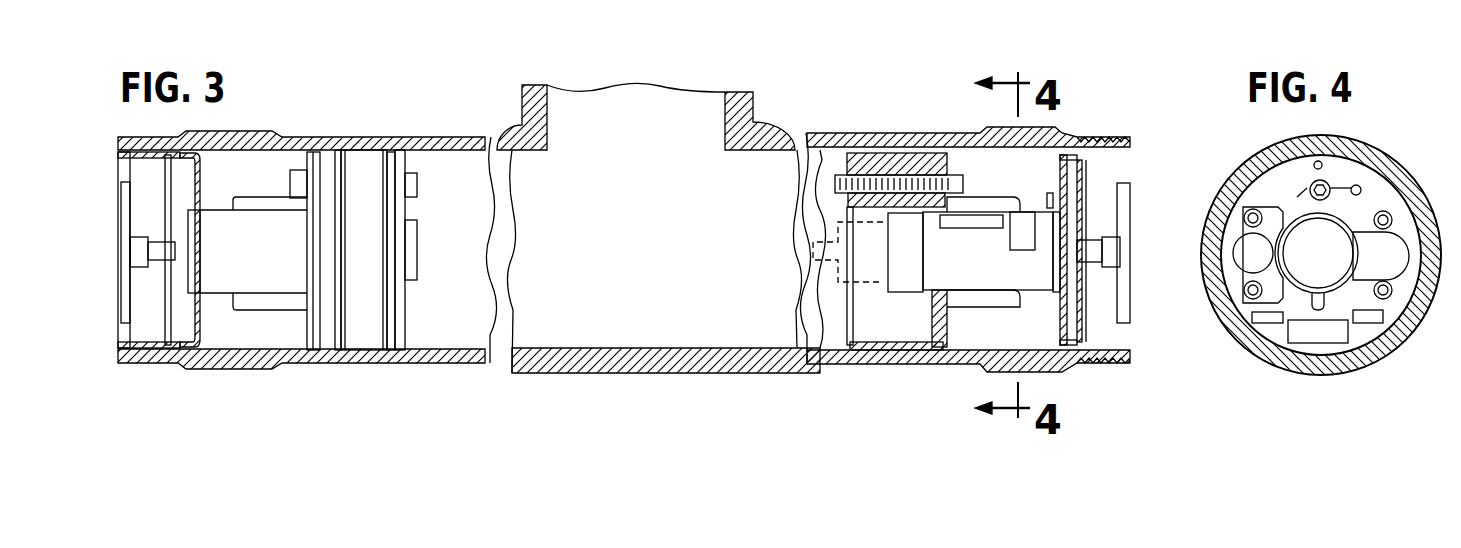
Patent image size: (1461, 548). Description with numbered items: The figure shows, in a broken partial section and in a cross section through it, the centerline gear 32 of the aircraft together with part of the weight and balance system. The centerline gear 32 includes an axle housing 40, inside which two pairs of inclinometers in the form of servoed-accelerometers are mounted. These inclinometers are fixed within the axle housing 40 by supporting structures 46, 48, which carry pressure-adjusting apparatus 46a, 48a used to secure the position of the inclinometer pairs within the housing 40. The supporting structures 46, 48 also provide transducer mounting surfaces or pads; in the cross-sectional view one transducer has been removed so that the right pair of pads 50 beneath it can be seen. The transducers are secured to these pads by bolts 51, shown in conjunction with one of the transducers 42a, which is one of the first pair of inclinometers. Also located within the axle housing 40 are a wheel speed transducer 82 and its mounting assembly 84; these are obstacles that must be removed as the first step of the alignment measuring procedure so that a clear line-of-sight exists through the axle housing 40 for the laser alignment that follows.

In FIG. 3, the centerline gear 32 is at (738, 372).
In FIG. 4, the centerline gear 32 is at (1263, 141).
In FIG. 3, the axle housing 40 is at (470, 362).
In FIG. 4, the axle housing 40 is at (1293, 362).
In FIG. 4, the transducer 42a is at (1272, 292).
In FIG. 3, the supporting structure 46 is at (885, 360).
In FIG. 3, the pressure-adjusting apparatus 46a is at (883, 178).
In FIG. 3, the supporting structure 48 is at (352, 168).
In FIG. 3, the pressure-adjusting apparatus 48a is at (295, 180).
In FIG. 4, the transducer mounting pads 50 is at (1389, 282).
In FIG. 4, the bolts 51 is at (1236, 285).
In FIG. 3, the wheel speed transducer 82 is at (967, 262).
In FIG. 3, the mounting assembly 84 is at (1073, 177).